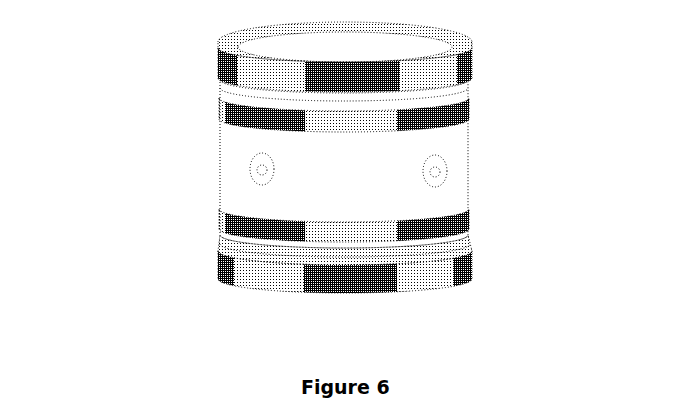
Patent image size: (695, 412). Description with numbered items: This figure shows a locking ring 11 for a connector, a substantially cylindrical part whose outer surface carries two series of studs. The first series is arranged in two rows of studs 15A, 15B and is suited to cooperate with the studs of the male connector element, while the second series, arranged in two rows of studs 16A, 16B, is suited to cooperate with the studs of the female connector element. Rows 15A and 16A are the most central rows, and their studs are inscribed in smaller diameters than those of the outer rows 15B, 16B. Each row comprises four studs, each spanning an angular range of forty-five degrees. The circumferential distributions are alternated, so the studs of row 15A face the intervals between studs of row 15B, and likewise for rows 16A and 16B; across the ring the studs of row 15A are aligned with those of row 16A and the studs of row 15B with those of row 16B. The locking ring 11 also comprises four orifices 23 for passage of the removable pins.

The locking ring 11 is at (553, 115).
The central row of studs of the first series 15A is at (225, 118).
The outer row of studs of the first series 15B is at (220, 46).
The central row of studs of the second series 16A is at (225, 223).
The outer row of studs of the second series 16B is at (220, 262).
The orifices 23 is at (440, 168).